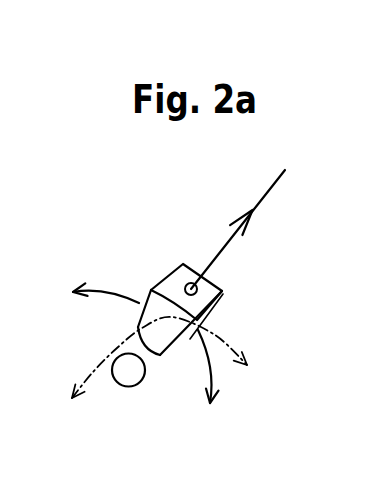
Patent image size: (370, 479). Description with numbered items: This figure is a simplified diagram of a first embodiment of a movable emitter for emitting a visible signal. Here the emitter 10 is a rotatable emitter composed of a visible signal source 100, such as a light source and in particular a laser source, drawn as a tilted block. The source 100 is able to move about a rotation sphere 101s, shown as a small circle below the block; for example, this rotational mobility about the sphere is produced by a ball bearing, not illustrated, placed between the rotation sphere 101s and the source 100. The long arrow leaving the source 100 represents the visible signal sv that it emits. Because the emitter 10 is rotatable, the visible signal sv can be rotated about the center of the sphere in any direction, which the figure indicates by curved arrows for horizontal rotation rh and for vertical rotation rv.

The emitter 10 is at (79, 207).
The visible signal source 100 is at (151, 291).
The rotation sphere 101s is at (128, 378).
The visible signal sv is at (229, 239).
The vertical rotation rv is at (167, 357).
The horizontal rotation rh is at (147, 358).